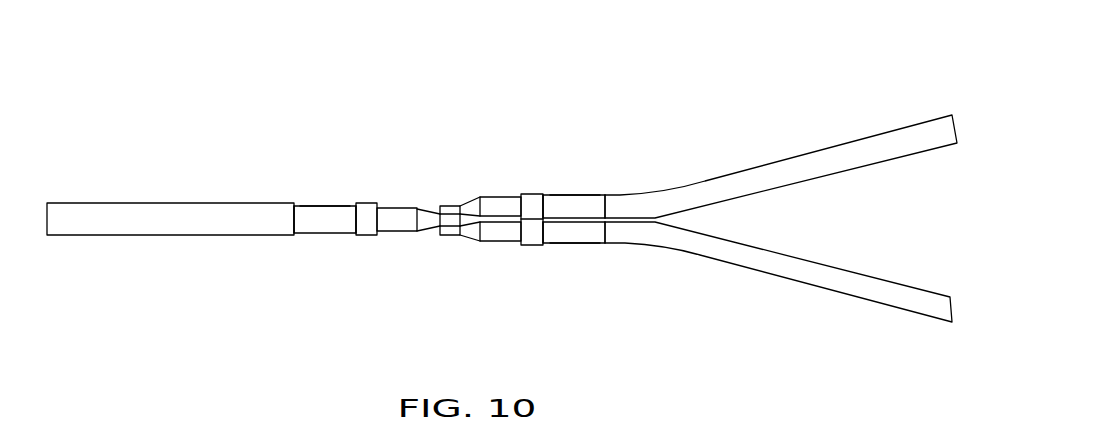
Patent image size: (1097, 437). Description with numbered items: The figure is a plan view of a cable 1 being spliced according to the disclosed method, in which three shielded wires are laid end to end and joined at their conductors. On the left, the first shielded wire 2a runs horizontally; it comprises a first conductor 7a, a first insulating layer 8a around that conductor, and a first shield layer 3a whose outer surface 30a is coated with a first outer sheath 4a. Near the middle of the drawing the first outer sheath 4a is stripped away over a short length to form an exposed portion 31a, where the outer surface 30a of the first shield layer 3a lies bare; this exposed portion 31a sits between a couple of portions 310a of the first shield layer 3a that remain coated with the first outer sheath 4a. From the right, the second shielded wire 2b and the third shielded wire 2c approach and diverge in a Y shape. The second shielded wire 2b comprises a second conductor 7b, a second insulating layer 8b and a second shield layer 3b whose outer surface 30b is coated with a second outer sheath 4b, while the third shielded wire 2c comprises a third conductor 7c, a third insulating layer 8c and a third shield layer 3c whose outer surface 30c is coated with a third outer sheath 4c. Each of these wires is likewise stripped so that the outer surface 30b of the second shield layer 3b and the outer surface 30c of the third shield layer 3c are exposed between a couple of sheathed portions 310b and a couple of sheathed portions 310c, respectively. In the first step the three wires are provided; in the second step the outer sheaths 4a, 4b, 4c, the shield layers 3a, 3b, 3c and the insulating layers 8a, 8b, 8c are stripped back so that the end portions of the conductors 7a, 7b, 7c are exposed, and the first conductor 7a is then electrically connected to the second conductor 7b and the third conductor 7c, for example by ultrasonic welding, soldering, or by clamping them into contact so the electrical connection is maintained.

The medical tube assembly 1 is at (170, 116).
The first shielded wire 2a is at (121, 265).
The second shielded wire 2b is at (768, 126).
The third shielded wire 2c is at (760, 301).
The first shield layer 3a is at (305, 204).
The second shield layer 3b is at (652, 192).
The third shield layer 3c is at (567, 245).
The first outer sheath 4a is at (100, 215).
The second outer sheath 4b is at (907, 132).
The third outer sheath 4c is at (940, 307).
The first conductor 7a is at (427, 205).
The second conductor 7b is at (456, 205).
The third conductor 7c is at (440, 234).
The first insulating layer 8a is at (390, 205).
The second insulating layer 8b is at (505, 205).
The third insulating layer 8c is at (482, 243).
The outer surface of first shield layer 30a is at (326, 187).
The outer surface of second shield layer 30b is at (597, 181).
The outer surface of third shield layer 30c is at (592, 257).
The exposed portion 31a is at (352, 203).
The portions of first shield layer coated with outer sheath 310a is at (348, 235).
The portions of second shield layer coated with outer sheath 310b is at (557, 195).
The portions of third shield layer coated with outer sheath 310c is at (527, 246).